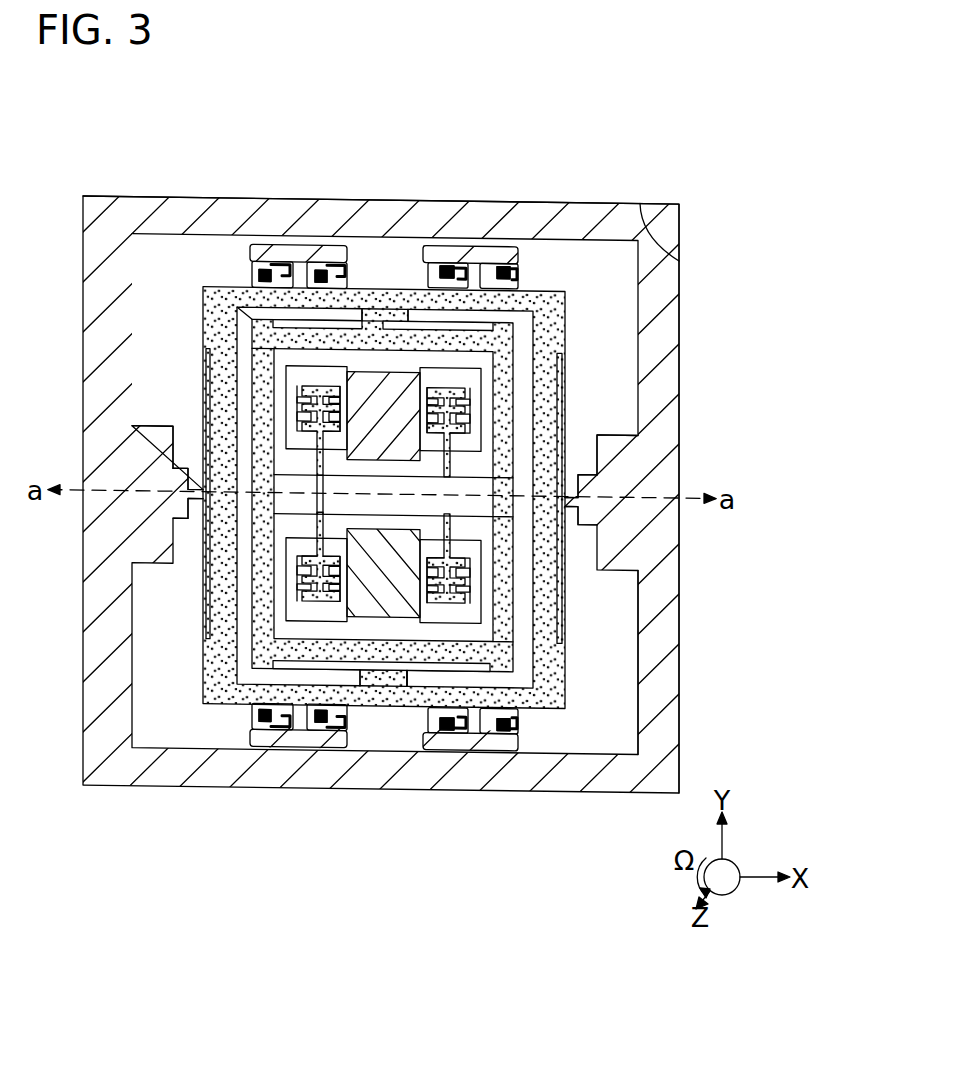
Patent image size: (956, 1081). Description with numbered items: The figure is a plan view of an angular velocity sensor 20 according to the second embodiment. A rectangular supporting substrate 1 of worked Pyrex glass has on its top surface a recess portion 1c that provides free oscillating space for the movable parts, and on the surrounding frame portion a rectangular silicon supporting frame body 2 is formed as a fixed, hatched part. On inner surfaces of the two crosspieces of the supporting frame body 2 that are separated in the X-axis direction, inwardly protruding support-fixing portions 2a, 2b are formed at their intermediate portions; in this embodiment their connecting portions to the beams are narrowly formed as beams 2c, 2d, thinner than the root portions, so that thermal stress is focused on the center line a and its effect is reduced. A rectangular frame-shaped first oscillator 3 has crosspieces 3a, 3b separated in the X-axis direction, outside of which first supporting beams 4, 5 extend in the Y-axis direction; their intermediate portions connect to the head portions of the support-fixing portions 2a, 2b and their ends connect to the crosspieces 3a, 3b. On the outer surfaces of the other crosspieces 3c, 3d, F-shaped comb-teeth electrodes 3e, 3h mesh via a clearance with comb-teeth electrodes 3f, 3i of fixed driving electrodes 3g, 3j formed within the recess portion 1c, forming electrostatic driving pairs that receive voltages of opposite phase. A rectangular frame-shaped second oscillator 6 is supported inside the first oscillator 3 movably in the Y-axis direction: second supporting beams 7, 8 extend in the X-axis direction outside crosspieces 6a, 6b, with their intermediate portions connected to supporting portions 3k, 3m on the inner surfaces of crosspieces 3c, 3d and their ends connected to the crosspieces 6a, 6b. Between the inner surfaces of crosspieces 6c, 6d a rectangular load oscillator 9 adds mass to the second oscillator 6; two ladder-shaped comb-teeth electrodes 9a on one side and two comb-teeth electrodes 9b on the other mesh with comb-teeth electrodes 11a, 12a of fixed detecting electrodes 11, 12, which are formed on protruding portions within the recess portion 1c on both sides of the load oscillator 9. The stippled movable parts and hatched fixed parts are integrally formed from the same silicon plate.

The supporting substrate 1 is at (680, 232).
The recess portion 1c is at (622, 696).
The supporting frame body 2 is at (667, 286).
The support-fixing portion 2a is at (186, 480).
The support-fixing portion 2b is at (597, 483).
The beam 2c is at (190, 505).
The beam 2d is at (578, 507).
The first oscillator 3 is at (562, 290).
The crosspiece 3a is at (209, 372).
The crosspiece 3b is at (560, 622).
The crosspiece 3c is at (447, 297).
The crosspiece 3d is at (400, 672).
The comb-teeth electrode 3e is at (258, 266).
The comb-teeth electrode 3f is at (272, 270).
The fixed driving electrode 3g is at (285, 252).
The comb-teeth electrode 3h is at (465, 267).
The comb-teeth electrode 3i is at (440, 267).
The fixed driving electrode 3j is at (495, 262).
The supporting portion 3k is at (386, 322).
The supporting portion 3m is at (385, 688).
The first supporting beam 4 is at (180, 463).
The first supporting beam 5 is at (545, 440).
The second oscillator 6 is at (250, 312).
The crosspiece 6a is at (300, 336).
The crosspiece 6b is at (450, 655).
The crosspiece 6c is at (245, 312).
The crosspiece 6d is at (505, 412).
The second supporting beam 7 is at (336, 318).
The second supporting beam 8 is at (360, 668).
The load oscillator 9 is at (372, 487).
The comb-teeth electrode 9a is at (300, 395).
The comb-teeth electrode 9b is at (292, 547).
The fixed detecting electrode 11 is at (398, 390).
The comb-teeth electrode 11a is at (287, 415).
The fixed detecting electrode 12 is at (365, 603).
The comb-teeth electrode 12a is at (292, 590).
The angular velocity sensor 20 is at (657, 203).